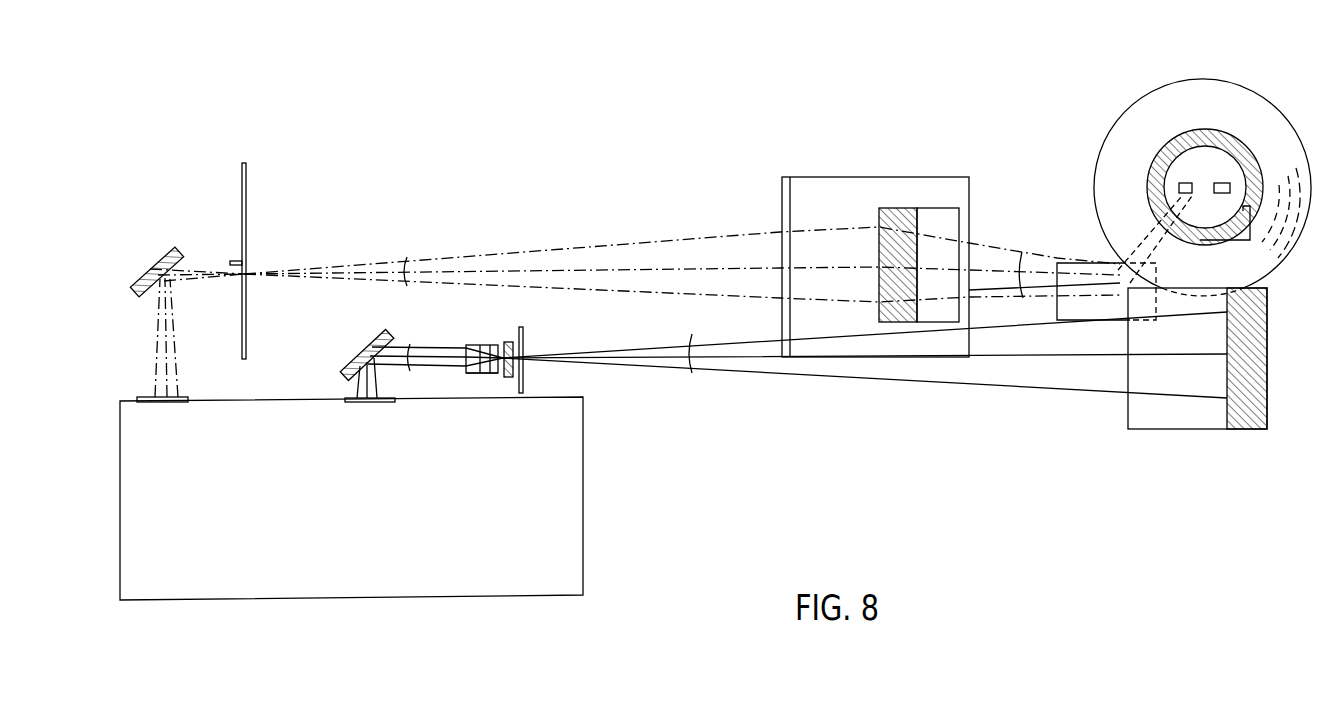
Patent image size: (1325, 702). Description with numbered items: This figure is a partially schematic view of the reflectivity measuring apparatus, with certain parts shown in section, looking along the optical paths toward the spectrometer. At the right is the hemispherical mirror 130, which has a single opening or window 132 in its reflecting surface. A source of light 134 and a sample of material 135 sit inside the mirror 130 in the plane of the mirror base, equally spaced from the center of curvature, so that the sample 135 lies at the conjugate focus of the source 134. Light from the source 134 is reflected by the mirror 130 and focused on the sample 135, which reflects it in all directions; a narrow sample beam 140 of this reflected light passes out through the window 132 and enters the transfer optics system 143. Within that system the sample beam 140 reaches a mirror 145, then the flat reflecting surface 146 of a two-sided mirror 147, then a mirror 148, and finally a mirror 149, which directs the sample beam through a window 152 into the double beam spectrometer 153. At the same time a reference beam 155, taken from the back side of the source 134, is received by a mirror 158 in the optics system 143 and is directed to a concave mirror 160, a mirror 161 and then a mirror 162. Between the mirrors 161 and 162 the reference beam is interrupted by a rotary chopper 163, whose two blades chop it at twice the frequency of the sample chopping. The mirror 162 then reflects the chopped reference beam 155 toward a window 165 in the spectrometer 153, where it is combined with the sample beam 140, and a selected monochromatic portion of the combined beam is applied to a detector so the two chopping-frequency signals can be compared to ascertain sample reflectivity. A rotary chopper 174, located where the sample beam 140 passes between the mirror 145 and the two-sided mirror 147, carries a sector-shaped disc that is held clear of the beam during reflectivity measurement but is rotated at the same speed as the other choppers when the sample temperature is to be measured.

The hemispherical mirror 130 is at (1094, 186).
The window 132 is at (1207, 241).
The source of light 134 is at (1180, 182).
The sample of material 135 is at (1226, 182).
The sample beam 140 is at (410, 360).
The transfer optics system 143 is at (729, 169).
The mirror 145 is at (1233, 430).
The flat reflecting surface 146 is at (488, 374).
The two-sided mirror 147 is at (491, 344).
The mirror 148 is at (509, 341).
The mirror 149 is at (350, 362).
The window 152 is at (345, 398).
The double beam spectrometer 153 is at (584, 498).
The reference beam 155 is at (405, 268).
The mirror 158 is at (1056, 309).
The concave mirror 160 is at (823, 176).
The mirror 161 is at (905, 207).
The mirror 162 is at (145, 272).
The rotary chopper 163 is at (247, 332).
The window 165 is at (196, 396).
The rotary chopper 174 is at (524, 380).